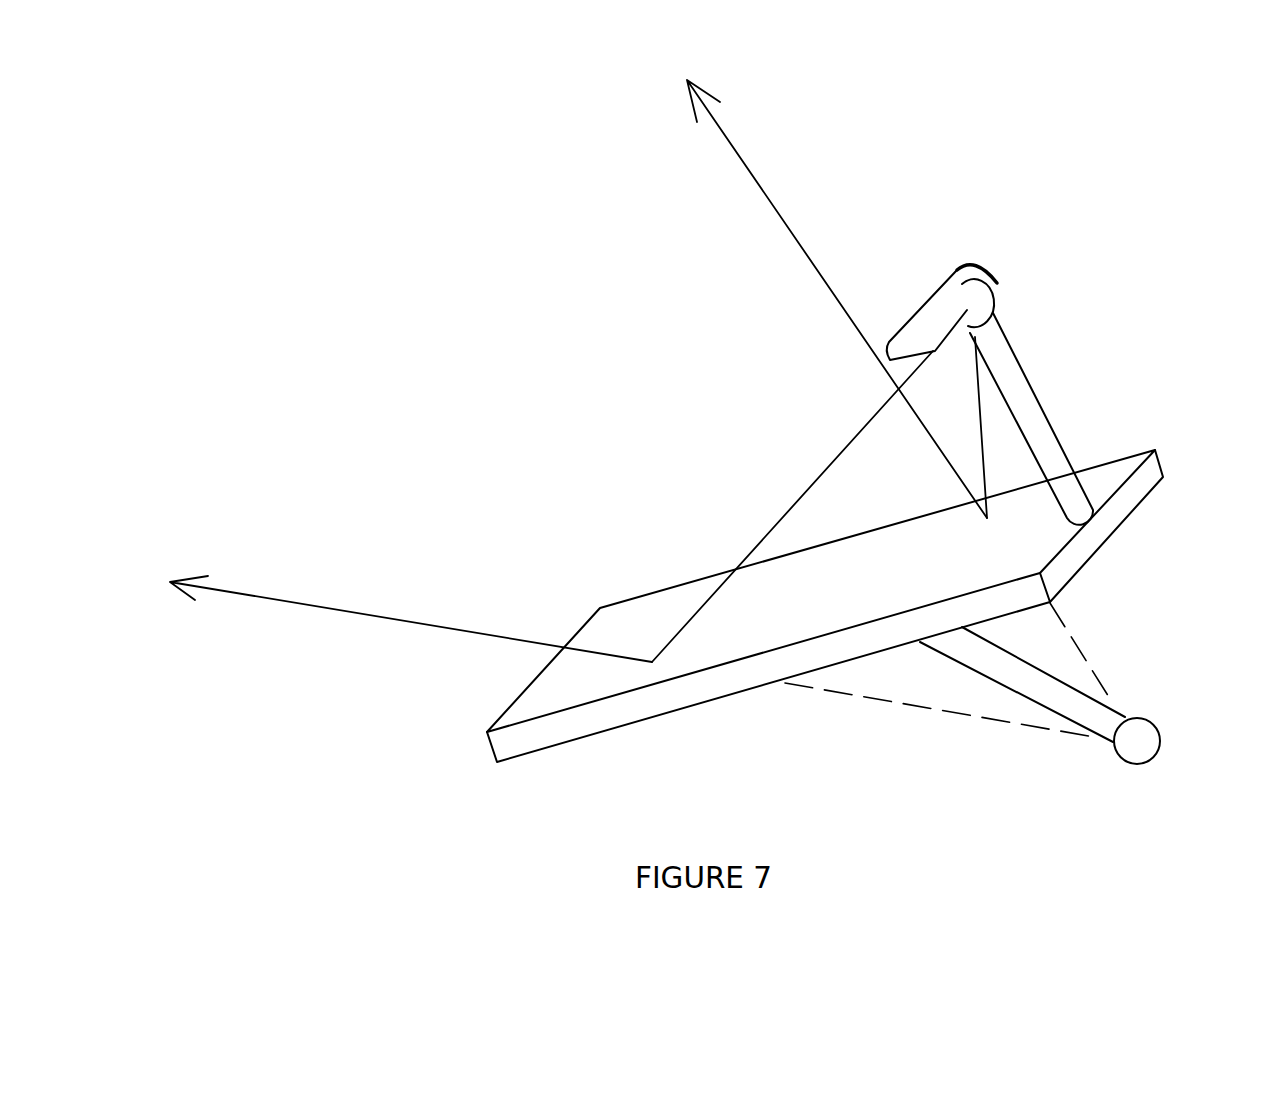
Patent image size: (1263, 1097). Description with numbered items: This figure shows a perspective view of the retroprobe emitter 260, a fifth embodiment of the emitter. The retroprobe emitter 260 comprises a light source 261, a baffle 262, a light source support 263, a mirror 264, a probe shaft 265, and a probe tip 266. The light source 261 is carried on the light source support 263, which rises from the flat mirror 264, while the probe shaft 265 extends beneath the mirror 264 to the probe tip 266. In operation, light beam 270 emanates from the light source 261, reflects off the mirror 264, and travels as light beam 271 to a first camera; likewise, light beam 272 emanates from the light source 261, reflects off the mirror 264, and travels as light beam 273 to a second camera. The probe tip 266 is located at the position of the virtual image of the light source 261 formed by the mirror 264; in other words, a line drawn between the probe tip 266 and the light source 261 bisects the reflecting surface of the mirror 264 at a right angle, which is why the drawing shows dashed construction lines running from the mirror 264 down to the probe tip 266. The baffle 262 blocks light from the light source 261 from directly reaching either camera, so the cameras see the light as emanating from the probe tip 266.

The retroprobe emitter 260 is at (398, 210).
The light source 261 is at (996, 298).
The baffle 262 is at (962, 266).
The light source support 263 is at (1020, 356).
The mirror 264 is at (1110, 462).
The probe shaft 265 is at (1020, 656).
The probe tip 266 is at (1153, 718).
The light beam 270 is at (978, 428).
The light beam 271 is at (787, 229).
The light beam 272 is at (813, 484).
The light beam 273 is at (495, 635).